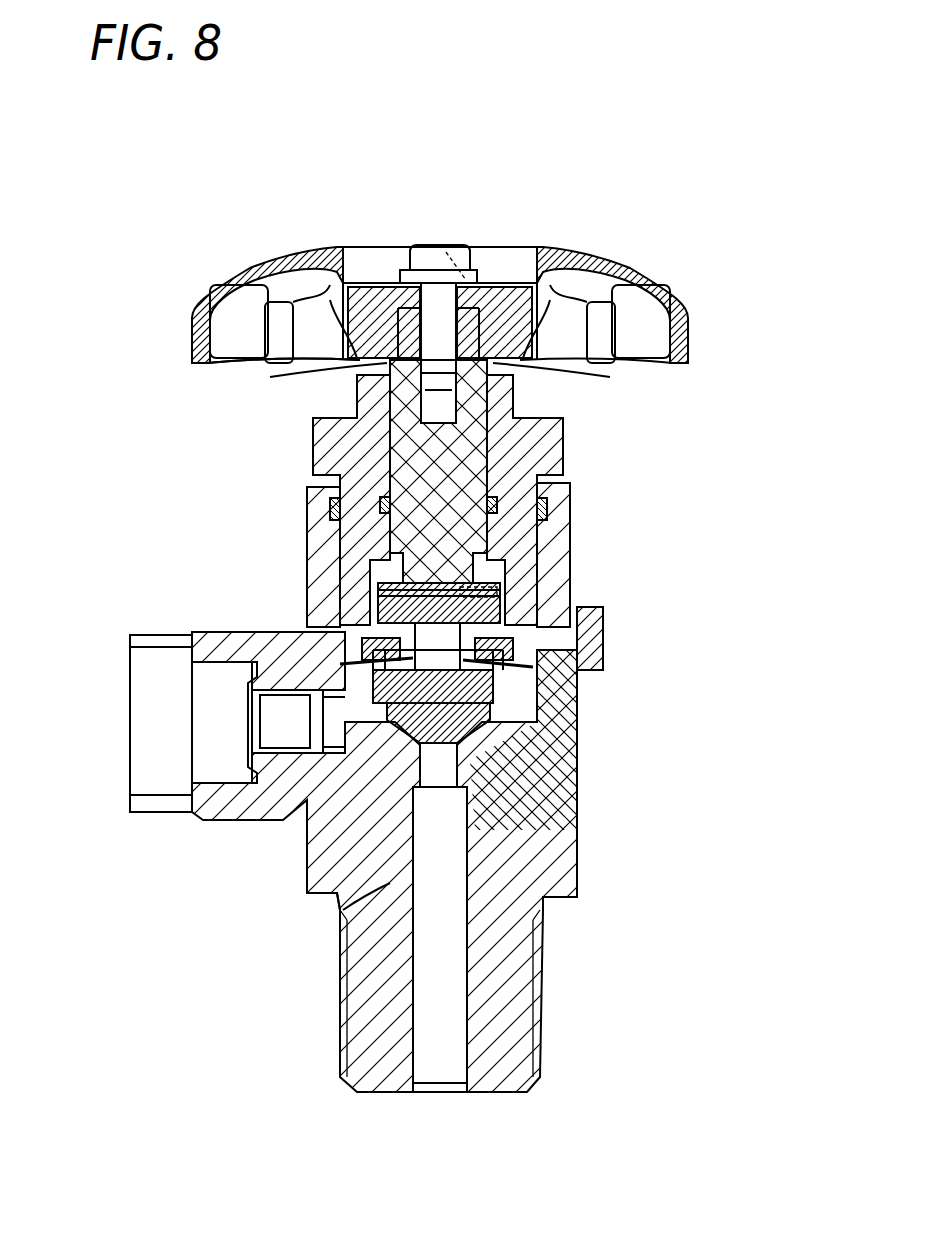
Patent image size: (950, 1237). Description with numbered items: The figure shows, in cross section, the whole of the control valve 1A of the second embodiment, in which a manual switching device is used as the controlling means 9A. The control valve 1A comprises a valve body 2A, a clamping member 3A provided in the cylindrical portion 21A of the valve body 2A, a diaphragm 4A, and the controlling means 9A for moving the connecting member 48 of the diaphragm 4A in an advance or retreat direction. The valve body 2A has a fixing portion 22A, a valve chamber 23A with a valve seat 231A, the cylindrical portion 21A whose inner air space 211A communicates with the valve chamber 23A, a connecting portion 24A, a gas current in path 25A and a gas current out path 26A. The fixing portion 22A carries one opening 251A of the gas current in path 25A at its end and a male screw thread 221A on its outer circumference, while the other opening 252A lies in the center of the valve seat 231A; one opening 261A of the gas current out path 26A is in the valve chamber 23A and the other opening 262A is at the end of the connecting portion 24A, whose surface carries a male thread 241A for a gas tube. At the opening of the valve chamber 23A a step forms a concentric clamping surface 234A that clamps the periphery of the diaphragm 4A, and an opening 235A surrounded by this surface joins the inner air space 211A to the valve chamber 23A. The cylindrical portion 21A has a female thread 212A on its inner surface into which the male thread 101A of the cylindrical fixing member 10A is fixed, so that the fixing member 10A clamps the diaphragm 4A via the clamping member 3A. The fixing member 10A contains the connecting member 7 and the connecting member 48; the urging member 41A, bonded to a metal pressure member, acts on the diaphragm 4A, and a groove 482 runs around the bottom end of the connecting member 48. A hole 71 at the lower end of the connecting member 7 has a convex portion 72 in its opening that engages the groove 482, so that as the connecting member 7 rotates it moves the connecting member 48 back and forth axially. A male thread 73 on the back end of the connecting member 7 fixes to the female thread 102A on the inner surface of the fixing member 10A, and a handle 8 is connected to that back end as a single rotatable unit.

The control valve 1A is at (728, 265).
The valve body 2A is at (590, 888).
The clamping member 3A is at (538, 660).
The diaphragm 4A is at (508, 728).
The connecting member 7 is at (472, 447).
The handle 8 is at (622, 272).
The controlling means 9A is at (155, 345).
The fixing member 10A is at (565, 450).
The cylindrical portion 21A is at (568, 545).
The fixing portion 22A is at (538, 1058).
The valve chamber 23A is at (500, 737).
The connecting portion 24A is at (205, 812).
The gas current in path 25A is at (433, 1063).
The gas current out path 26A is at (210, 724).
The urging member 41A is at (345, 925).
The connecting member 48 is at (385, 590).
The hole 71 is at (405, 520).
The convex portion 72 is at (425, 530).
The male thread 73 is at (495, 378).
The male thread 101A is at (480, 572).
The female thread 102A is at (345, 368).
The inner air space 211A is at (355, 543).
The female thread 212A is at (525, 555).
The male screw thread 221A is at (345, 1049).
The valve seat 231A is at (480, 762).
The clamping surface 234A is at (505, 700).
The opening 235A is at (345, 668).
The male thread 241A is at (230, 823).
The opening 251A is at (452, 1089).
The opening 252A is at (447, 757).
The opening 261A is at (307, 820).
The opening 262A is at (203, 700).
The groove 482 is at (535, 565).